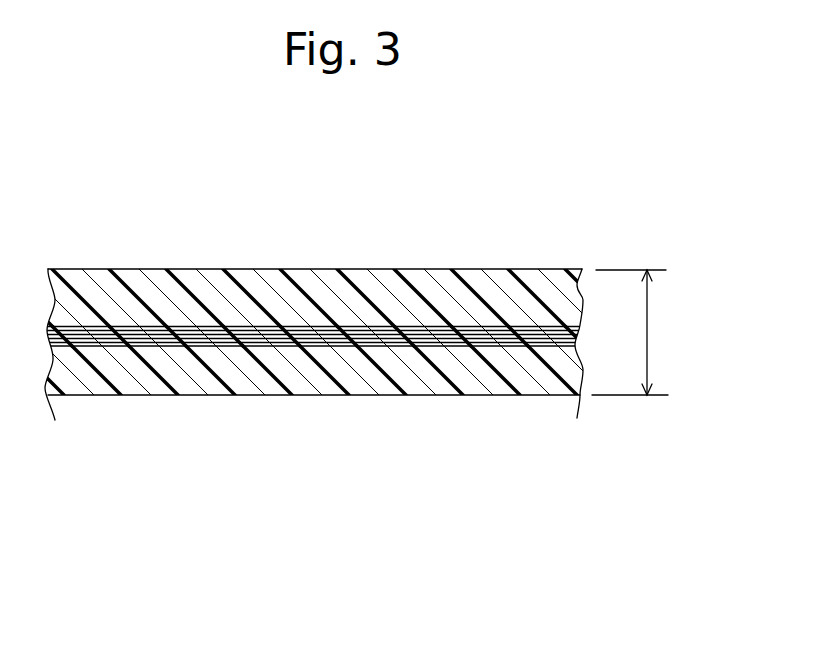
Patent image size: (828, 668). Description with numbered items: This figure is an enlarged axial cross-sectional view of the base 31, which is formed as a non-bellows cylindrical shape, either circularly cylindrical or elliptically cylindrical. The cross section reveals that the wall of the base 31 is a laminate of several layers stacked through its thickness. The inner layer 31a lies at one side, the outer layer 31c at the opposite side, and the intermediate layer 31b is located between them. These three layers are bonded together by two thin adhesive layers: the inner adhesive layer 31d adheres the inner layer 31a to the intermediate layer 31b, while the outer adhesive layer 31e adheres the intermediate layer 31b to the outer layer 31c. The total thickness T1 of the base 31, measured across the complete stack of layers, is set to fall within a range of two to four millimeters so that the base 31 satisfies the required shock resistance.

The base 31 is at (491, 220).
The inner layer 31a is at (387, 357).
The intermediate layer 31b is at (253, 330).
The outer layer 31c is at (124, 281).
The inner adhesive layer 31d is at (323, 343).
The outer adhesive layer 31e is at (190, 326).
The total thickness T1 is at (637, 332).